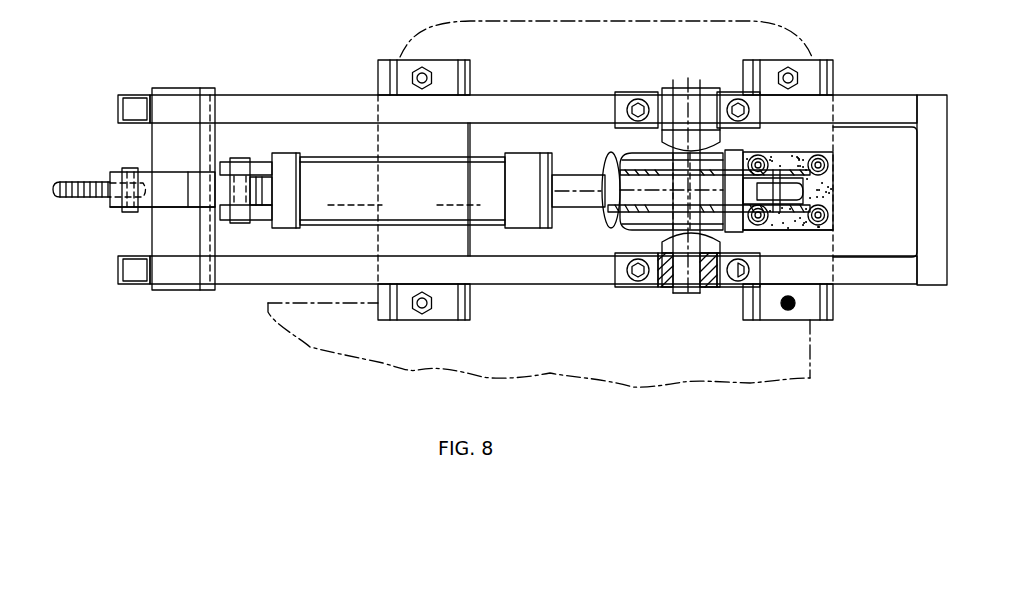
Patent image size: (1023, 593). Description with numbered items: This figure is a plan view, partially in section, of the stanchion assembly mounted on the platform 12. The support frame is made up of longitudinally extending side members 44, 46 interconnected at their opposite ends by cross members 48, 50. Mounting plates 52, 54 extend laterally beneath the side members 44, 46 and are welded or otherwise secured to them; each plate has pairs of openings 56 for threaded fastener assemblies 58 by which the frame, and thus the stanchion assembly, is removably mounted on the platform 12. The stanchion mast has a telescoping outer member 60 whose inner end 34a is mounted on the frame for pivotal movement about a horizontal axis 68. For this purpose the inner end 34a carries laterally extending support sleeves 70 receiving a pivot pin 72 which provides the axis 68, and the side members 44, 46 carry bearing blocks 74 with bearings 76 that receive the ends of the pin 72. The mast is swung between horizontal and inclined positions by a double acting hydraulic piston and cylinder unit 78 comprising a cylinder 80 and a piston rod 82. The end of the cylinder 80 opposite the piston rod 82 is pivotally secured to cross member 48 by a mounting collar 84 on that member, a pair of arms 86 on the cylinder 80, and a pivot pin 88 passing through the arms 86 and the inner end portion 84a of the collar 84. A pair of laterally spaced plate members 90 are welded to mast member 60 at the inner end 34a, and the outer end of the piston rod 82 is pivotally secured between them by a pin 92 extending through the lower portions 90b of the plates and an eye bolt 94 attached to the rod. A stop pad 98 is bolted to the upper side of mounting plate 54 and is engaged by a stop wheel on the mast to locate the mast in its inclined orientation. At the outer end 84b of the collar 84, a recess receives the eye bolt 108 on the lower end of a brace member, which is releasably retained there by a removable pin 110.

The platform 12 is at (633, 392).
The inner end of stanchion mast 34a is at (720, 150).
The side member 44 is at (538, 278).
The side member 46 is at (563, 103).
The cross member 48 is at (178, 237).
The cross member 50 is at (933, 167).
The mounting plate 52 is at (407, 308).
The mounting plate 54 is at (770, 315).
The openings 56 is at (788, 312).
The threaded fastener assemblies 58 is at (425, 78).
The outer mast member 60 is at (603, 232).
The horizontal axis 68 is at (690, 294).
The support sleeves 70 is at (660, 145).
The pivot pin 72 is at (682, 287).
The bearing blocks 74 is at (713, 98).
The bearings 76 is at (713, 287).
The double acting hydraulic piston and cylinder unit 78 is at (412, 141).
The cylinder 80 is at (368, 163).
The piston rod 82 is at (583, 187).
The mounting collar 84 is at (182, 180).
The inner end portion of collar 84a is at (262, 195).
The outer end of collar 84b is at (113, 203).
The arms 86 is at (262, 167).
The pivot pin 88 is at (240, 223).
The plate members 90 is at (642, 180).
The lower portions of plates 90b is at (792, 168).
The pin 92 is at (777, 220).
The eye bolt 94 is at (835, 195).
The stop pad 98 is at (808, 227).
The eye bolt 108 is at (78, 180).
The removable pin 110 is at (130, 167).